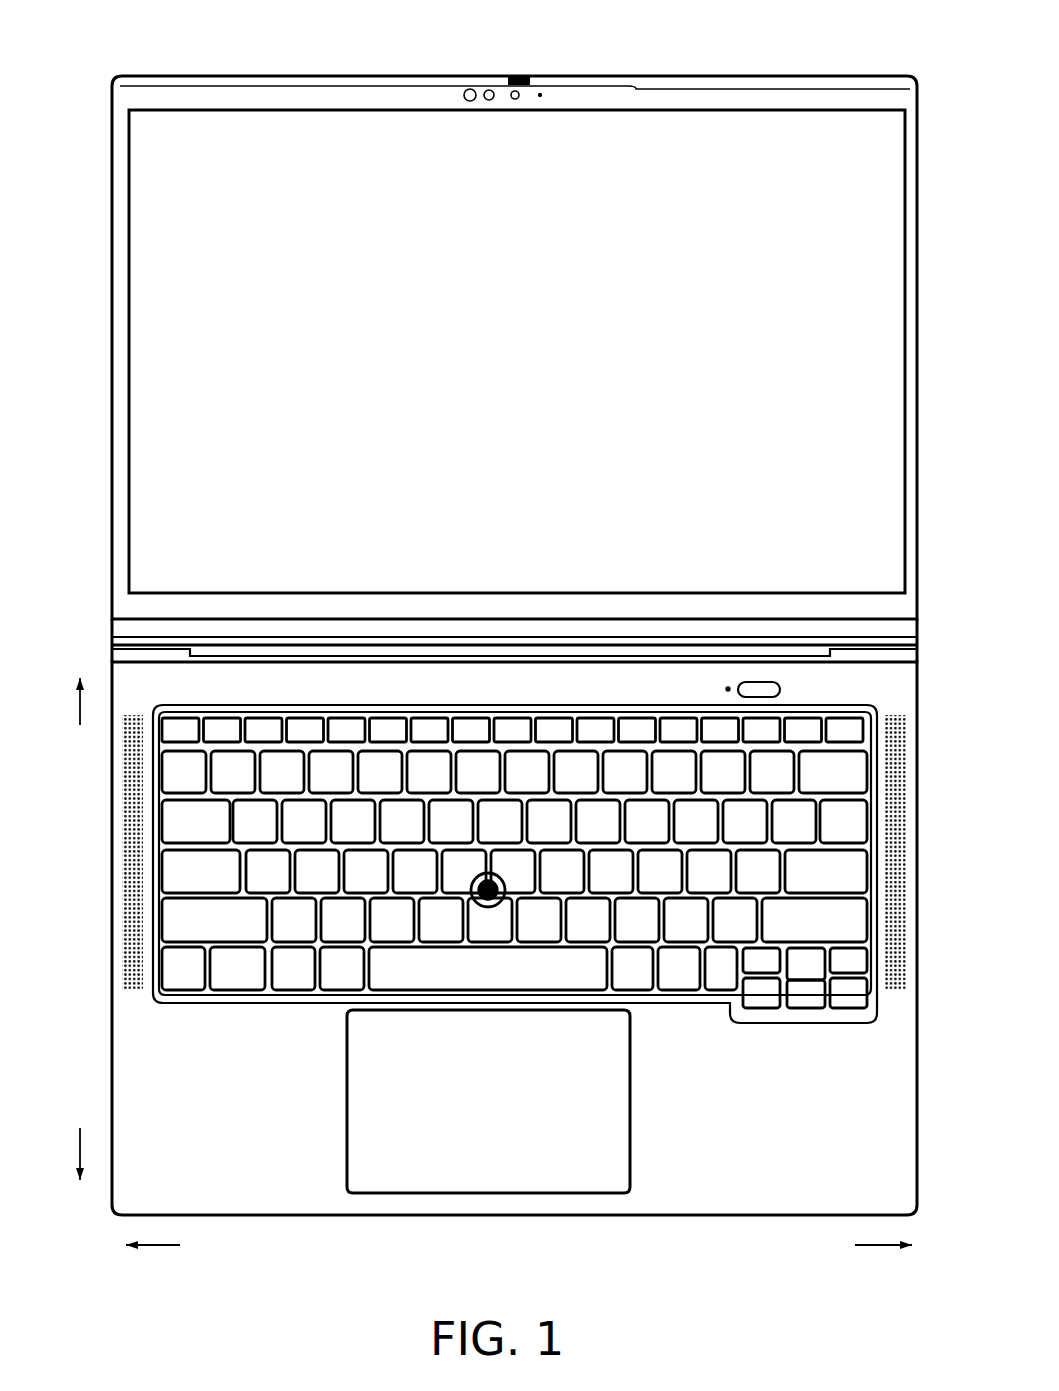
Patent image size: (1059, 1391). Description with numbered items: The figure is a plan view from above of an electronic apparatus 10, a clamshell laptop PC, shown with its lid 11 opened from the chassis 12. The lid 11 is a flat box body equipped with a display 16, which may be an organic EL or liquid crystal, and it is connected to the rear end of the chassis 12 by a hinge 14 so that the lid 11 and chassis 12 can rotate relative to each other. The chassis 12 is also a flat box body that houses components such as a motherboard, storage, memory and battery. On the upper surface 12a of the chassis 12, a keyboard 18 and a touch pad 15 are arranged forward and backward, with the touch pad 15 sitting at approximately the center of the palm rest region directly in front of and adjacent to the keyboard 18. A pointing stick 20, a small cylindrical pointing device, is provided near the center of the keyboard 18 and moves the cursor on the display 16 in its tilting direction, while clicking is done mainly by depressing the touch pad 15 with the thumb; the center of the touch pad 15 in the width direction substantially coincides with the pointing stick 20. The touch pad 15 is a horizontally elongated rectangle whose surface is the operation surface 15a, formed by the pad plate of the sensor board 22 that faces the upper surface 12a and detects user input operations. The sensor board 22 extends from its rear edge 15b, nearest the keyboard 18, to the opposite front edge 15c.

The electronic apparatus 10 is at (70, 32).
The lid 11 is at (224, 75).
The chassis 12 is at (244, 1218).
The upper surface 12a is at (781, 1184).
The hinge 14 is at (241, 640).
The touch pad 15 is at (446, 1139).
The operation surface 15a is at (488, 1146).
The sensor board 22 is at (547, 1155).
The edge 15b is at (390, 1010).
The edge 15c is at (378, 1195).
The display 16 is at (693, 136).
The keyboard 18 is at (703, 1001).
The pointing stick 20 is at (488, 872).